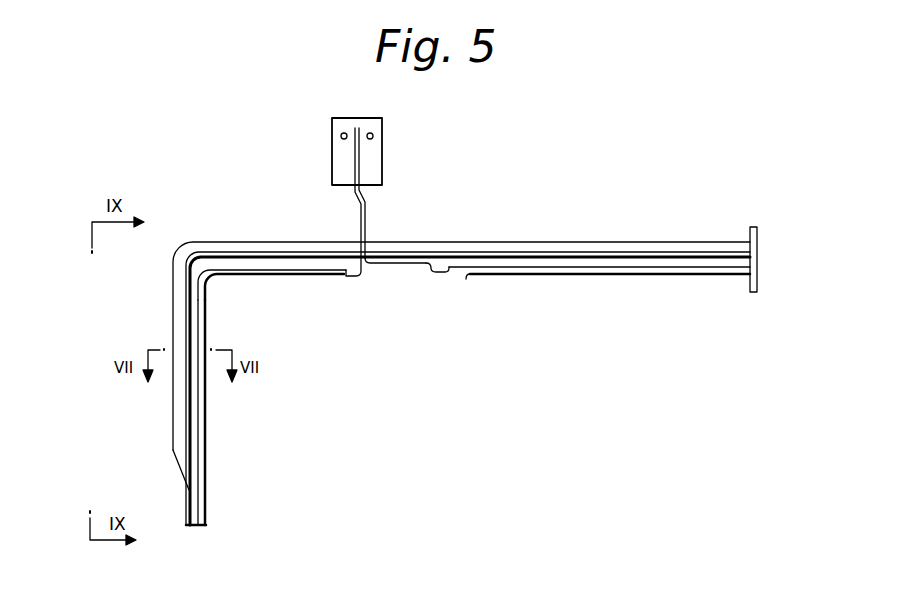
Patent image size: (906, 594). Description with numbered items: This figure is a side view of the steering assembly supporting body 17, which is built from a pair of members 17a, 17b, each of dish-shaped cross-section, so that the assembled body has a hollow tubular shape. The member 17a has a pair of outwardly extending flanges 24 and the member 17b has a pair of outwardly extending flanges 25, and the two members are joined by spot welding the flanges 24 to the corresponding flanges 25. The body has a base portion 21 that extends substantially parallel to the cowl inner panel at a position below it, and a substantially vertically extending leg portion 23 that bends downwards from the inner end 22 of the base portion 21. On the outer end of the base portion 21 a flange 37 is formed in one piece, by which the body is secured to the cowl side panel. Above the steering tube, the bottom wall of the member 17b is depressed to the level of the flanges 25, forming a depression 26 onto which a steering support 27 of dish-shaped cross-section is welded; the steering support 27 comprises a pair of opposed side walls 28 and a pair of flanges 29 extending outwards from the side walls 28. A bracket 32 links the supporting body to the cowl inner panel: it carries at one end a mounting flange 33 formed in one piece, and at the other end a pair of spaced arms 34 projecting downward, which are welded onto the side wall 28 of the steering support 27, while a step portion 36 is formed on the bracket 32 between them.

The steering assembly supporting body 17 is at (497, 237).
The member 17a is at (613, 243).
The member 17b is at (610, 272).
The base portion 21 is at (569, 246).
The inner end 22 is at (196, 243).
The leg portion 23 is at (174, 317).
The flanges 24 is at (673, 255).
The flanges 25 is at (669, 263).
The depression 26 is at (430, 263).
The steering support 27 is at (403, 266).
The side walls 28 is at (380, 274).
The flanges 29 is at (350, 278).
The bracket 32 is at (354, 212).
The mounting flange 33 is at (332, 150).
The arms 34 is at (350, 269).
The step portion 36 is at (366, 198).
The flange 37 is at (758, 232).